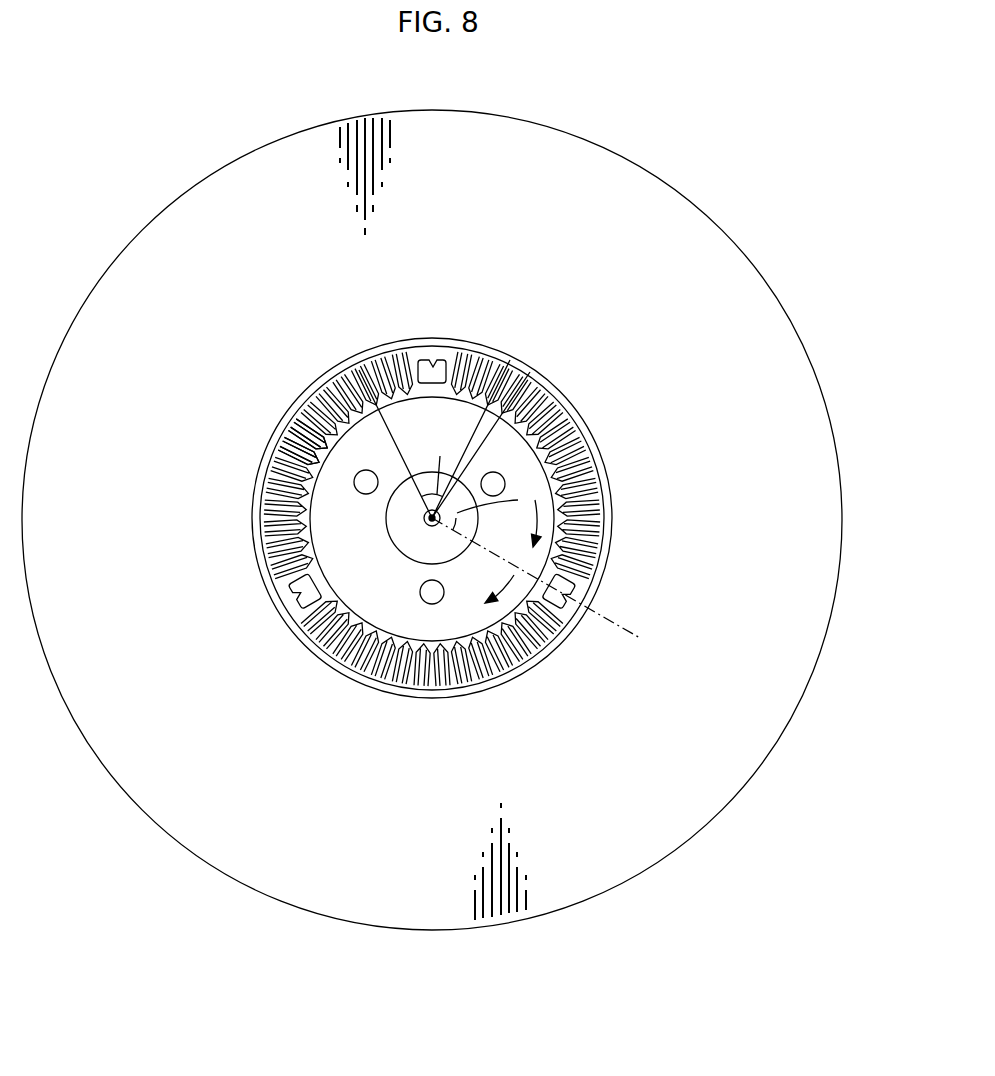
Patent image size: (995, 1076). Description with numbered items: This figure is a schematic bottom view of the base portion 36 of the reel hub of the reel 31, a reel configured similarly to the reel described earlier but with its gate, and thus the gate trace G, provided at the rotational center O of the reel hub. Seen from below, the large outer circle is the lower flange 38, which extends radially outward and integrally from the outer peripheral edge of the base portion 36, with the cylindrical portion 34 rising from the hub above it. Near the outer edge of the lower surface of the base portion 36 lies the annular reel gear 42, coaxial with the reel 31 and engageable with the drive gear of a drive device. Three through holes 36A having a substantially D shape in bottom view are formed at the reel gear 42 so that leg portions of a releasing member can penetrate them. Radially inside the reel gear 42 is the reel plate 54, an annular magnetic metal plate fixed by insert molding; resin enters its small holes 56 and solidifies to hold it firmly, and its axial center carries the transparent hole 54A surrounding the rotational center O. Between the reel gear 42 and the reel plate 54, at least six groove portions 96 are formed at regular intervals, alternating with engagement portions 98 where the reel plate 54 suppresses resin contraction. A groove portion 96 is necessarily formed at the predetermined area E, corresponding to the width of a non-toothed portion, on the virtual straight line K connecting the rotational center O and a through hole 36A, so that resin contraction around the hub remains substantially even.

The reel 31 is at (432, 518).
The lower flange 38 is at (742, 263).
The cylindrical portion 34 is at (568, 401).
The base portion 36 is at (410, 560).
The through hole 36A is at (432, 360).
The reel gear 42 is at (268, 540).
The reel plate 54 is at (330, 483).
The transparent hole 54A is at (400, 553).
The small holes 56 is at (363, 490).
The groove portions 96 is at (283, 425).
The engagement portions 98 is at (355, 410).
The rotational center O is at (433, 523).
The gate trace G is at (424, 520).
The predetermined area E is at (502, 580).
The virtual straight line K is at (638, 650).